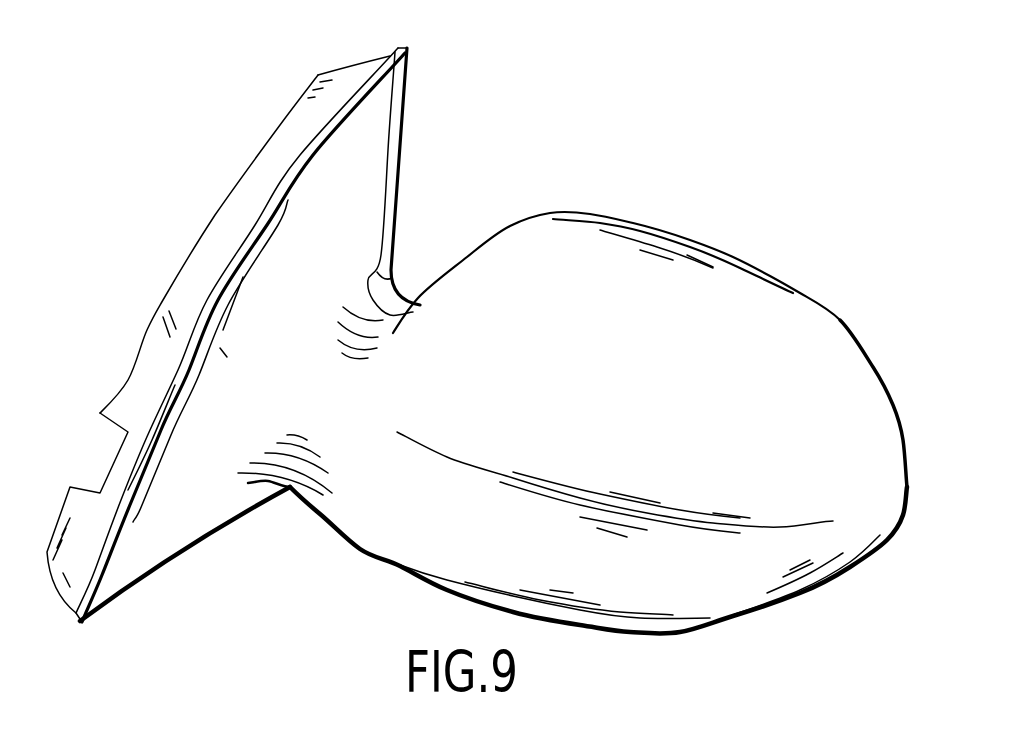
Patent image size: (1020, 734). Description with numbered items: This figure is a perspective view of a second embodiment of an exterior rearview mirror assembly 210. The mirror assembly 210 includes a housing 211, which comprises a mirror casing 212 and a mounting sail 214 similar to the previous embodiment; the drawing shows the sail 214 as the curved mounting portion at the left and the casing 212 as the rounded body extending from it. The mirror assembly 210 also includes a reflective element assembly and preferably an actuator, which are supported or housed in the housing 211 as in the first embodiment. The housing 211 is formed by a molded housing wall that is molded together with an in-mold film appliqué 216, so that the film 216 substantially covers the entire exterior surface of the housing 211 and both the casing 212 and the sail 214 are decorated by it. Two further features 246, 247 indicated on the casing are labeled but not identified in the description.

The exterior mirror assembly 210 is at (501, 354).
The housing 211 is at (458, 237).
The mirror casing 212 is at (712, 247).
The mounting sail 214 is at (353, 183).
The in-mold film appliqué 216 is at (553, 250).
The outboard side wall 246 is at (840, 317).
The lower edge 247 is at (843, 533).